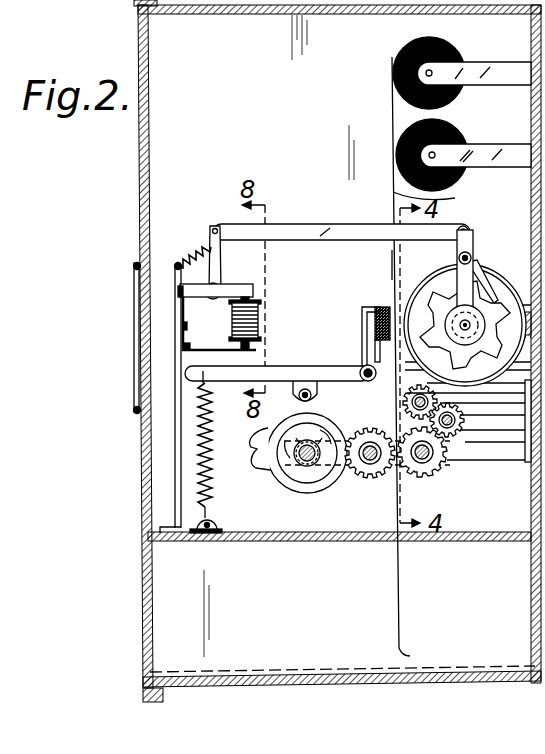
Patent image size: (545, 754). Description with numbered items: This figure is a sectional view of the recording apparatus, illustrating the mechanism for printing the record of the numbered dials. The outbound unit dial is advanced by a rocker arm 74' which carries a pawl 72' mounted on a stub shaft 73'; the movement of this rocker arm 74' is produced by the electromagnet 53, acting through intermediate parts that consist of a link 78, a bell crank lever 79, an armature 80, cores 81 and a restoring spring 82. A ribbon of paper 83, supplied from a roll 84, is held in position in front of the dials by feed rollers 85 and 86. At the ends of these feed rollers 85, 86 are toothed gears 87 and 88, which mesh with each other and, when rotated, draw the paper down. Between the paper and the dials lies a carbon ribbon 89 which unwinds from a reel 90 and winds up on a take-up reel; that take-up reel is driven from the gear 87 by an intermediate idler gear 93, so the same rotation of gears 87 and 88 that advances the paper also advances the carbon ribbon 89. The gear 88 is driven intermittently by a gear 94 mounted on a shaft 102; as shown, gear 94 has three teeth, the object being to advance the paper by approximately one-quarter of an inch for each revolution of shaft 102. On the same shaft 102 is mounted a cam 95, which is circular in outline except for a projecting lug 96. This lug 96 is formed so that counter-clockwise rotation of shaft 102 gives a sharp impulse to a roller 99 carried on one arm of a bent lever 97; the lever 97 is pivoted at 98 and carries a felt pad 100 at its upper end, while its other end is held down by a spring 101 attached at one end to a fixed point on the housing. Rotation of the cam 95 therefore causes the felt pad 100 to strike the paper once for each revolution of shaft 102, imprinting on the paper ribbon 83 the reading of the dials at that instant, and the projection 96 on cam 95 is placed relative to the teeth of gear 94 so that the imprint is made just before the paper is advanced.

The electromagnet 53 is at (262, 325).
The pawl 72' is at (467, 317).
The stub shaft 73' is at (444, 252).
The rocker arm 74' is at (483, 286).
The link 78 is at (320, 224).
The bell crank lever 79 is at (228, 268).
The armature 80 is at (255, 300).
The cores 81 is at (230, 303).
The restoring spring 82 is at (192, 252).
The ribbon of paper 83 is at (397, 598).
The roll 84 is at (465, 55).
The feed roller 85 is at (393, 422).
The feed roller 86 is at (432, 480).
The toothed gear 87 is at (445, 455).
The toothed gear 88 is at (370, 480).
The carbon ribbon 89 is at (392, 262).
The reel 90 is at (460, 132).
The idler gear 93 is at (458, 432).
The gear 94 is at (310, 484).
The cam 95 is at (317, 495).
The projecting lug 96 is at (257, 458).
The bent lever 97 is at (360, 350).
The pivot 98 is at (360, 378).
The roller 99 is at (312, 366).
The felt pad 100 is at (383, 305).
The spring 101 is at (200, 455).
The shaft 102 is at (297, 464).